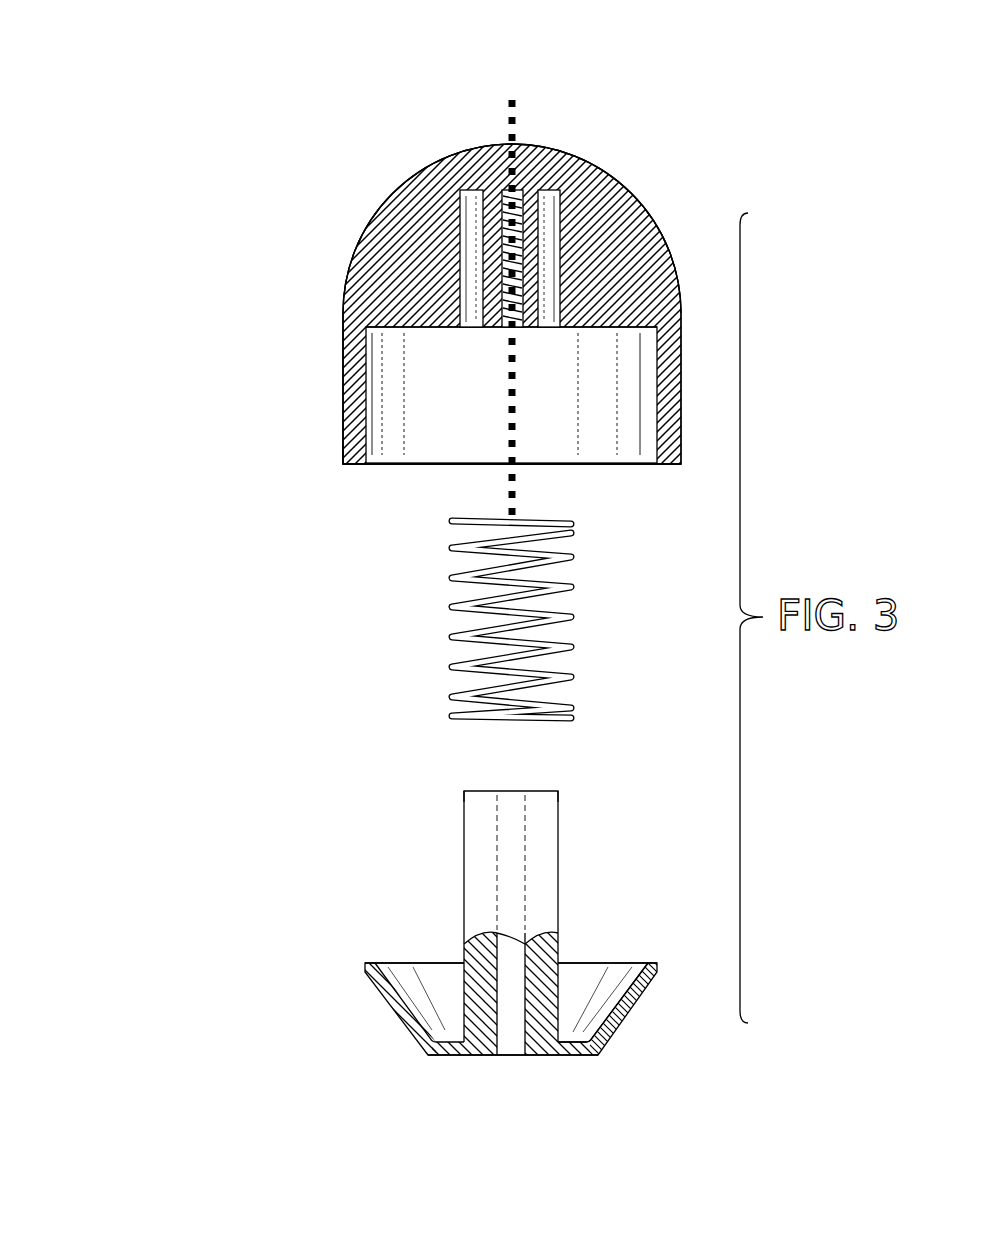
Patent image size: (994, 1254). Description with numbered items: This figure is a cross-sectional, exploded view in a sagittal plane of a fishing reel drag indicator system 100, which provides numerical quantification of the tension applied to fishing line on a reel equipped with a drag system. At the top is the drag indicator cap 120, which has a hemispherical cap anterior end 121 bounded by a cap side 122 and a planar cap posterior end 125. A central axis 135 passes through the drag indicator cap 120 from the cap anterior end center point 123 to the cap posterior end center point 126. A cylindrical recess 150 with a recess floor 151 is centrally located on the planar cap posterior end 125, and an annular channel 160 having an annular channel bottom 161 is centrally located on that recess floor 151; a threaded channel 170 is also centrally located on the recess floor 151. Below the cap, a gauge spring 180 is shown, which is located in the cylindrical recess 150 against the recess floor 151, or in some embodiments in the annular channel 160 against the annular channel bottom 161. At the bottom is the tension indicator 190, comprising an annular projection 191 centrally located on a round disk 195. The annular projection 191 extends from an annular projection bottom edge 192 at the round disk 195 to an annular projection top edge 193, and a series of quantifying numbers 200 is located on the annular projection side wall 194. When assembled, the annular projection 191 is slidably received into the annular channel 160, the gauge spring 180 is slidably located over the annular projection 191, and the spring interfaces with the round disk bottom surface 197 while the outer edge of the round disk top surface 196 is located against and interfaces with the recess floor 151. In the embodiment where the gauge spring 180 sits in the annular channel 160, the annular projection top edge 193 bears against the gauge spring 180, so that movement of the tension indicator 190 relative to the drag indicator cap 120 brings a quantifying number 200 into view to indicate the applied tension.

The fishing reel drag indicator system 100 is at (141, 92).
The drag indicator cap 120 is at (565, 127).
The cap anterior end 121 is at (377, 217).
The cap side 122 is at (347, 425).
The cap anterior end center point 123 is at (510, 142).
The cap posterior end 125 is at (352, 467).
The cap posterior end center point 126 is at (510, 467).
The central axis 135 is at (516, 469).
The cylindrical recess 150 is at (341, 407).
The recess floor 151 is at (372, 334).
The annular channel 160 is at (432, 275).
The annular channel bottom 161 is at (363, 228).
The threaded channel 170 is at (537, 227).
The gauge spring 180 is at (453, 693).
The tension indicator 190 is at (580, 831).
The annular projection 191 is at (467, 790).
The annular projection bottom edge 192 is at (563, 1037).
The annular projection top edge 193 is at (543, 790).
The annular projection side wall 194 is at (464, 872).
The round disk 195 is at (388, 995).
The round disk top surface 196 is at (365, 965).
The round disk bottom surface 197 is at (583, 1055).
The quantifying number 200 is at (515, 898).